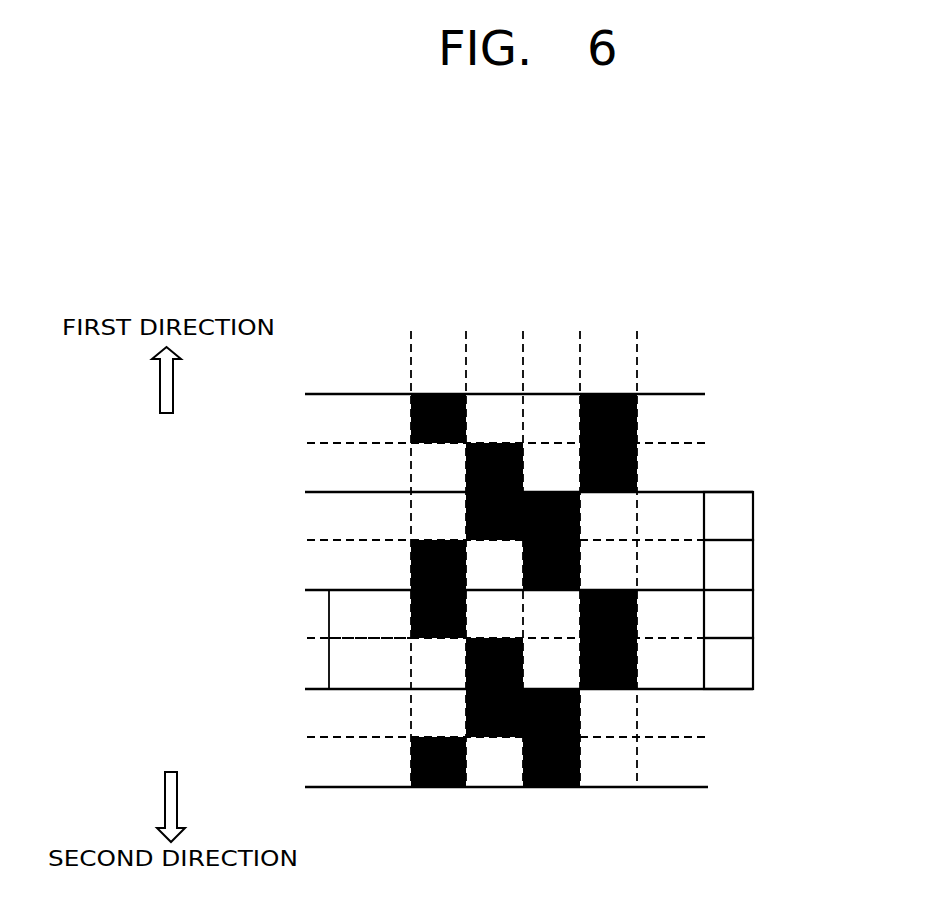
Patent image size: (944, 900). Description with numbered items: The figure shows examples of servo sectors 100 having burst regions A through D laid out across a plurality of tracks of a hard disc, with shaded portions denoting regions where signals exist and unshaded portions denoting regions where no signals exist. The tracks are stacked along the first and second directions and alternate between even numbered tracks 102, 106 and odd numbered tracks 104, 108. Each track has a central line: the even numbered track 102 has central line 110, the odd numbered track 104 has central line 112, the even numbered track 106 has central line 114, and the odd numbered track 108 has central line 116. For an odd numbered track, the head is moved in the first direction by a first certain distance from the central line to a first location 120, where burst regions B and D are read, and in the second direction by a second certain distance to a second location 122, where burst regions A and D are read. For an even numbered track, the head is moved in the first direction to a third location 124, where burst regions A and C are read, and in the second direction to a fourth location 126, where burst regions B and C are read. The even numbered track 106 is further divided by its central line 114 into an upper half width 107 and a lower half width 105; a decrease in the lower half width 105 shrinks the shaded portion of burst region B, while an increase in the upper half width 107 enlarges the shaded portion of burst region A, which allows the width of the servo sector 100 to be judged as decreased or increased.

The servo sector 100 is at (635, 331).
The even numbered track 102 is at (280, 395).
The odd numbered track 104 is at (280, 492).
The lower half width 105 is at (329, 667).
The even numbered track 106 is at (280, 592).
The upper half width 107 is at (329, 618).
The odd numbered track 108 is at (280, 689).
The central line 110 is at (683, 441).
The central line 112 is at (650, 535).
The central line 114 is at (653, 639).
The central line 116 is at (662, 737).
The first location 120 is at (745, 517).
The second location 122 is at (745, 565).
The third location 124 is at (745, 615).
The fourth location 126 is at (745, 665).